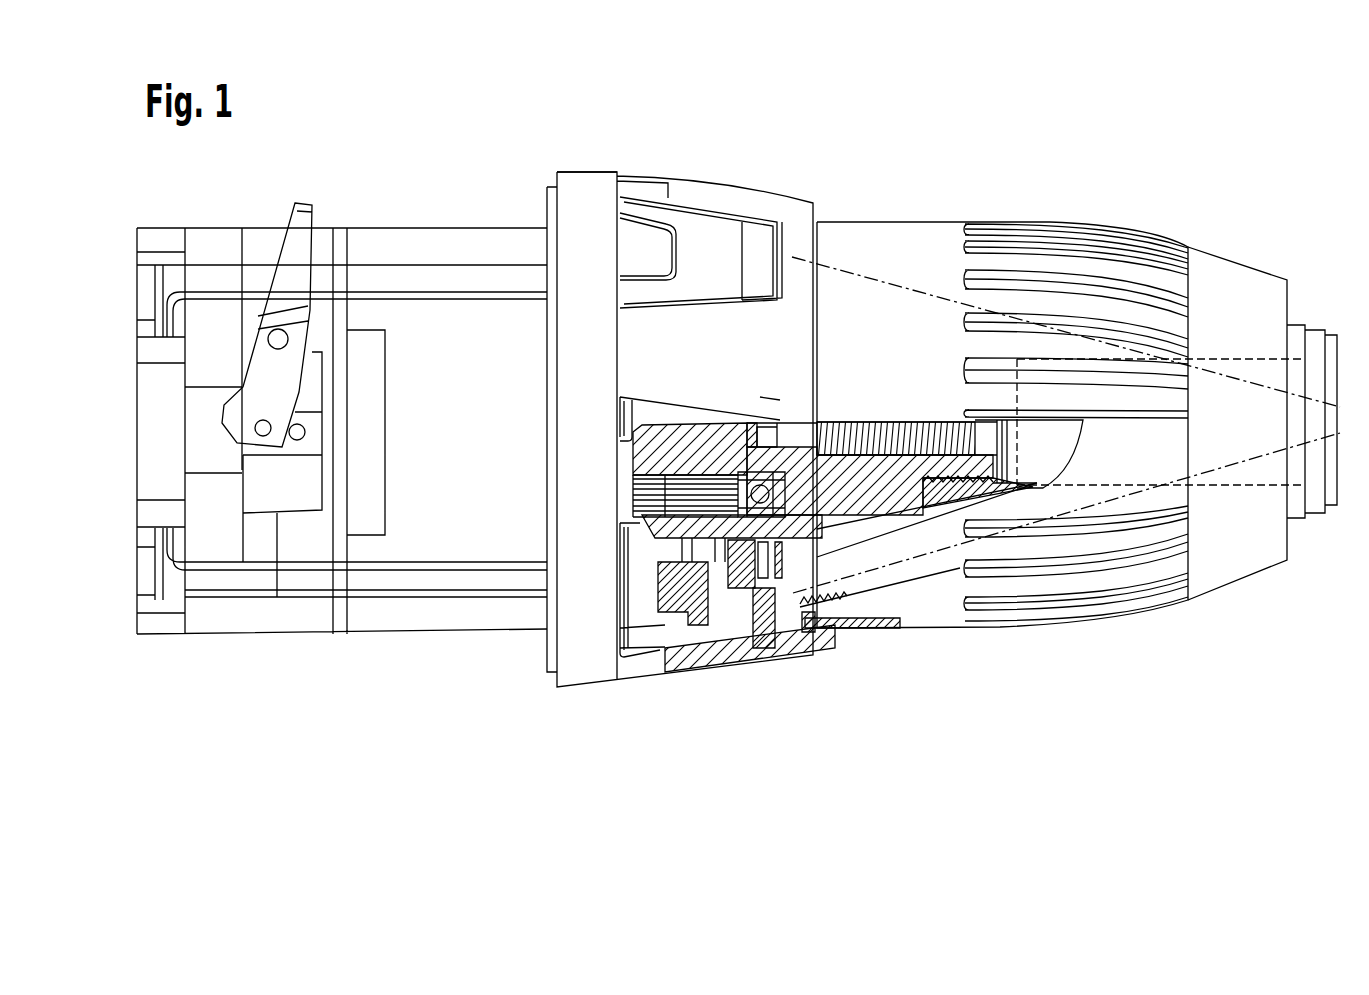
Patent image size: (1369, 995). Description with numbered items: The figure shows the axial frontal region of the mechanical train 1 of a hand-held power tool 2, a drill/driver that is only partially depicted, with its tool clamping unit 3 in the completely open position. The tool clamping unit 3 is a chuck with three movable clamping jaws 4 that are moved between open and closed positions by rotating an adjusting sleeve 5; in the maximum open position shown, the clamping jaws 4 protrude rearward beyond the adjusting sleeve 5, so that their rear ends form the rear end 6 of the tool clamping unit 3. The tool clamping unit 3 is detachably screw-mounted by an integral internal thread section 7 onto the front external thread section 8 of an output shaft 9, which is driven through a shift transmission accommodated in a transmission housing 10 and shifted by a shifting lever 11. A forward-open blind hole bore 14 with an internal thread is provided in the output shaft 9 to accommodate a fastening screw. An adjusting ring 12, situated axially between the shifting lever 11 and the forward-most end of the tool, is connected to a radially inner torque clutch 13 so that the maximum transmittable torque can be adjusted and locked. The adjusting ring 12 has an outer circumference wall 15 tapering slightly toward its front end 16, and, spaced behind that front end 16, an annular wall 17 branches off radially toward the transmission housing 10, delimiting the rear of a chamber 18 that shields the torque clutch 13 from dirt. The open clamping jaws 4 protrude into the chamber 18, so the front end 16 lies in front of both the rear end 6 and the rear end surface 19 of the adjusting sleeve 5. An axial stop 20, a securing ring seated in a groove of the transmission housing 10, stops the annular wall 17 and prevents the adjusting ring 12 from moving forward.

The mechanical train 1 is at (632, 135).
The hand-held power tool 2 is at (437, 698).
The tool clamping unit 3 is at (1217, 270).
The clamping jaws 4 is at (867, 582).
The adjusting sleeve 5 is at (997, 235).
The rear end of the tool clamping unit 6 is at (790, 612).
The internal thread section 7 is at (950, 477).
The external thread section 8 is at (955, 440).
The output shaft 9 is at (665, 452).
The transmission housing 10 is at (428, 323).
The shifting lever 11 is at (303, 205).
The adjusting ring 12 is at (773, 207).
The torque clutch 13 is at (680, 655).
The blind hole bore 14 is at (818, 430).
The circumference wall 15 is at (700, 662).
The front end of the circumference wall 16 is at (807, 634).
The annular wall 17 is at (753, 641).
The chamber 18 is at (800, 650).
The rear end surface of the adjusting sleeve 19 is at (807, 633).
The axial stop 20 is at (775, 440).